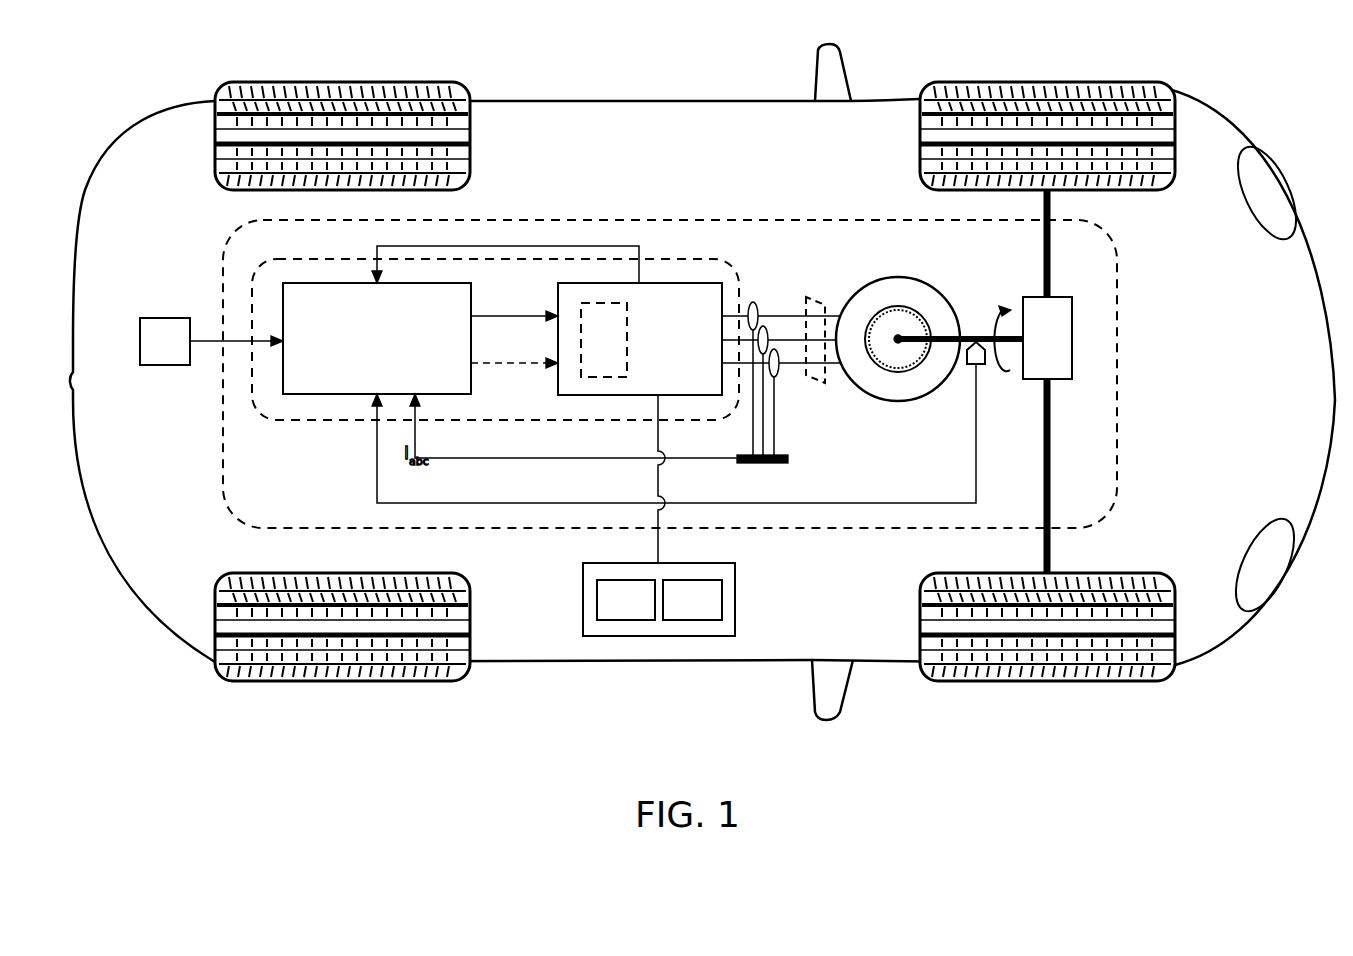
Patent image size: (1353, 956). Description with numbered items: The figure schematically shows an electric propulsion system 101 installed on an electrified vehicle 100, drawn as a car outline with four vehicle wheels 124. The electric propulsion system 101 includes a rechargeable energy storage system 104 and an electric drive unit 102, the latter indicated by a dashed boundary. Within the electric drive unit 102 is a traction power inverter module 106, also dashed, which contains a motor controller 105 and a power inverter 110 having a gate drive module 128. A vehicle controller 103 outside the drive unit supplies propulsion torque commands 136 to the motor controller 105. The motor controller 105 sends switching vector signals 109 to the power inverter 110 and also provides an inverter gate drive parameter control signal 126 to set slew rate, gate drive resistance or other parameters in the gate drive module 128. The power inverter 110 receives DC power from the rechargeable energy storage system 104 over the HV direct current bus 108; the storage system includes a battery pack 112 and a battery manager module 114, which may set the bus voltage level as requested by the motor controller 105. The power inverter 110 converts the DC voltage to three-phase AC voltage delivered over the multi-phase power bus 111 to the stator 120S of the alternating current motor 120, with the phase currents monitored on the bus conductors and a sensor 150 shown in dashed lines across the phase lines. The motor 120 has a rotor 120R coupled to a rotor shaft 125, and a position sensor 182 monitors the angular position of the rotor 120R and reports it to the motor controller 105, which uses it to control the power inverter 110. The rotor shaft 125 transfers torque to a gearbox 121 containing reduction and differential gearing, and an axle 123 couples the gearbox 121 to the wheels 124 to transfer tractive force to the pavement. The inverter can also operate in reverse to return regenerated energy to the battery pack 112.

The electrified vehicle 100 is at (633, 101).
The electric propulsion system 101 is at (717, 361).
The electric drive unit 102 is at (510, 220).
The vehicle controller 103 is at (165, 341).
The rechargeable energy storage system 104 is at (643, 587).
The motor controller 105 is at (377, 338).
The traction power inverter module 106 is at (323, 259).
The HV direct current bus 108 is at (660, 546).
The switching vector signals 109 is at (522, 318).
The power inverter 110 is at (640, 339).
The multi-phase power bus 111 is at (782, 270).
The electro-chemical battery pack 112 is at (626, 600).
The battery manager module 114 is at (692, 600).
The alternating current motor 120 is at (899, 317).
The stator 120S is at (876, 290).
The rotor 120R is at (925, 313).
The gearbox 121 is at (1047, 338).
The axle 123 is at (1044, 272).
The vehicle wheel 124 is at (358, 82).
The rotor shaft 125 is at (978, 334).
The inverter gate drive parameter control signal 126 is at (522, 364).
The gate drive module 128 is at (604, 340).
The propulsion torque commands 136 is at (208, 342).
The voltage sensor 150 is at (810, 386).
The position sensor 182 is at (968, 371).